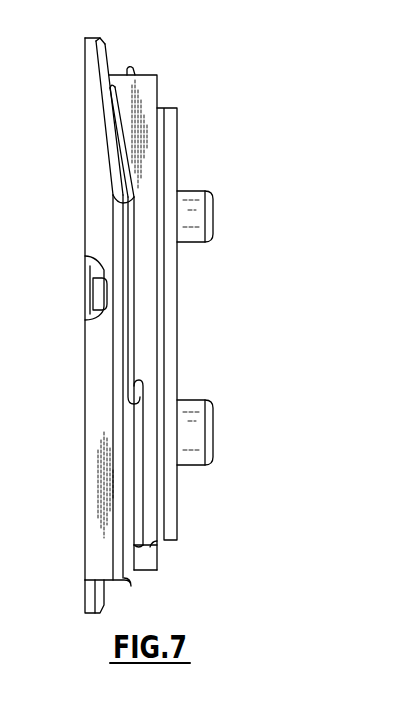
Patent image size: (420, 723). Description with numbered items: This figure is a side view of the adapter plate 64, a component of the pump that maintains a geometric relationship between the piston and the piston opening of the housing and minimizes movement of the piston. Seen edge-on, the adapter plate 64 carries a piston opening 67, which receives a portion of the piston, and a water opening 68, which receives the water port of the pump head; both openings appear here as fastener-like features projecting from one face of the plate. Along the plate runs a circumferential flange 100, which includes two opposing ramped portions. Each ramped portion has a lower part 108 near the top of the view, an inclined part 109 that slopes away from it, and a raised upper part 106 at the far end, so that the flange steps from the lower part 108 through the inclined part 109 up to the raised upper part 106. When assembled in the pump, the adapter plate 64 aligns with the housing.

The adapter plate 64 is at (222, 77).
The piston opening 67 is at (208, 435).
The water opening 68 is at (200, 218).
The circumferential flange 100 is at (100, 198).
The raised upper part 106 is at (137, 560).
The lower part 108 is at (103, 52).
The inclined part 109 is at (108, 108).